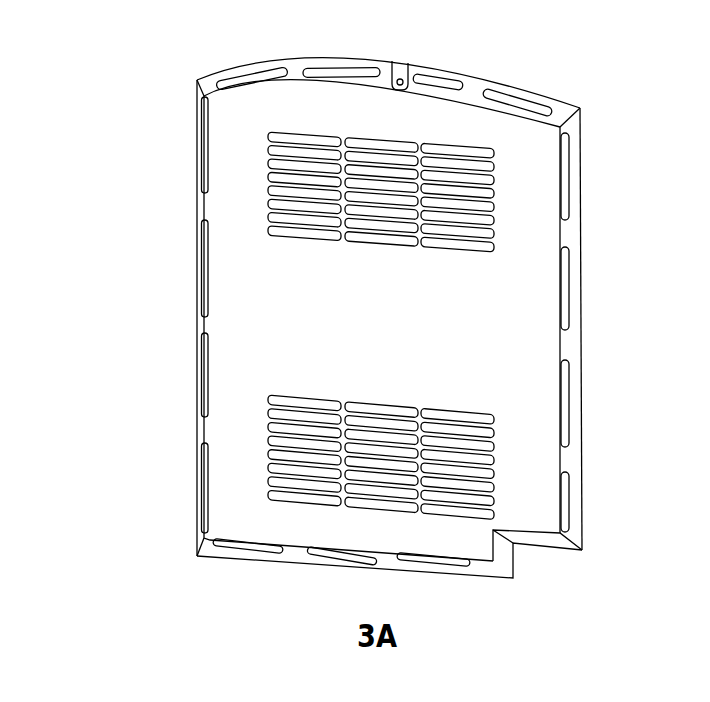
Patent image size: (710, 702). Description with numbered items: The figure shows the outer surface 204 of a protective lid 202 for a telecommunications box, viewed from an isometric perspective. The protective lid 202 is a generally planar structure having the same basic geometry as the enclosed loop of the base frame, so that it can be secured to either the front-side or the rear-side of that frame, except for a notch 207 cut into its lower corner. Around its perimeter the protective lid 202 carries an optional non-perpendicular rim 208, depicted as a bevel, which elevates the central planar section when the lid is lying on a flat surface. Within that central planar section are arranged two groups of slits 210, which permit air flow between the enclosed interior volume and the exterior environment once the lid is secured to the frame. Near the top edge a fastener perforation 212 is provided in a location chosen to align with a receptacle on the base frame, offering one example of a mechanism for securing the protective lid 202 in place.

The protective lid 202 is at (408, 37).
The outer surface 204 is at (240, 305).
The notch 207 is at (549, 580).
The non-perpendicular rim 208 is at (570, 180).
The slits 210 is at (477, 152).
The fastener perforation 212 is at (407, 80).